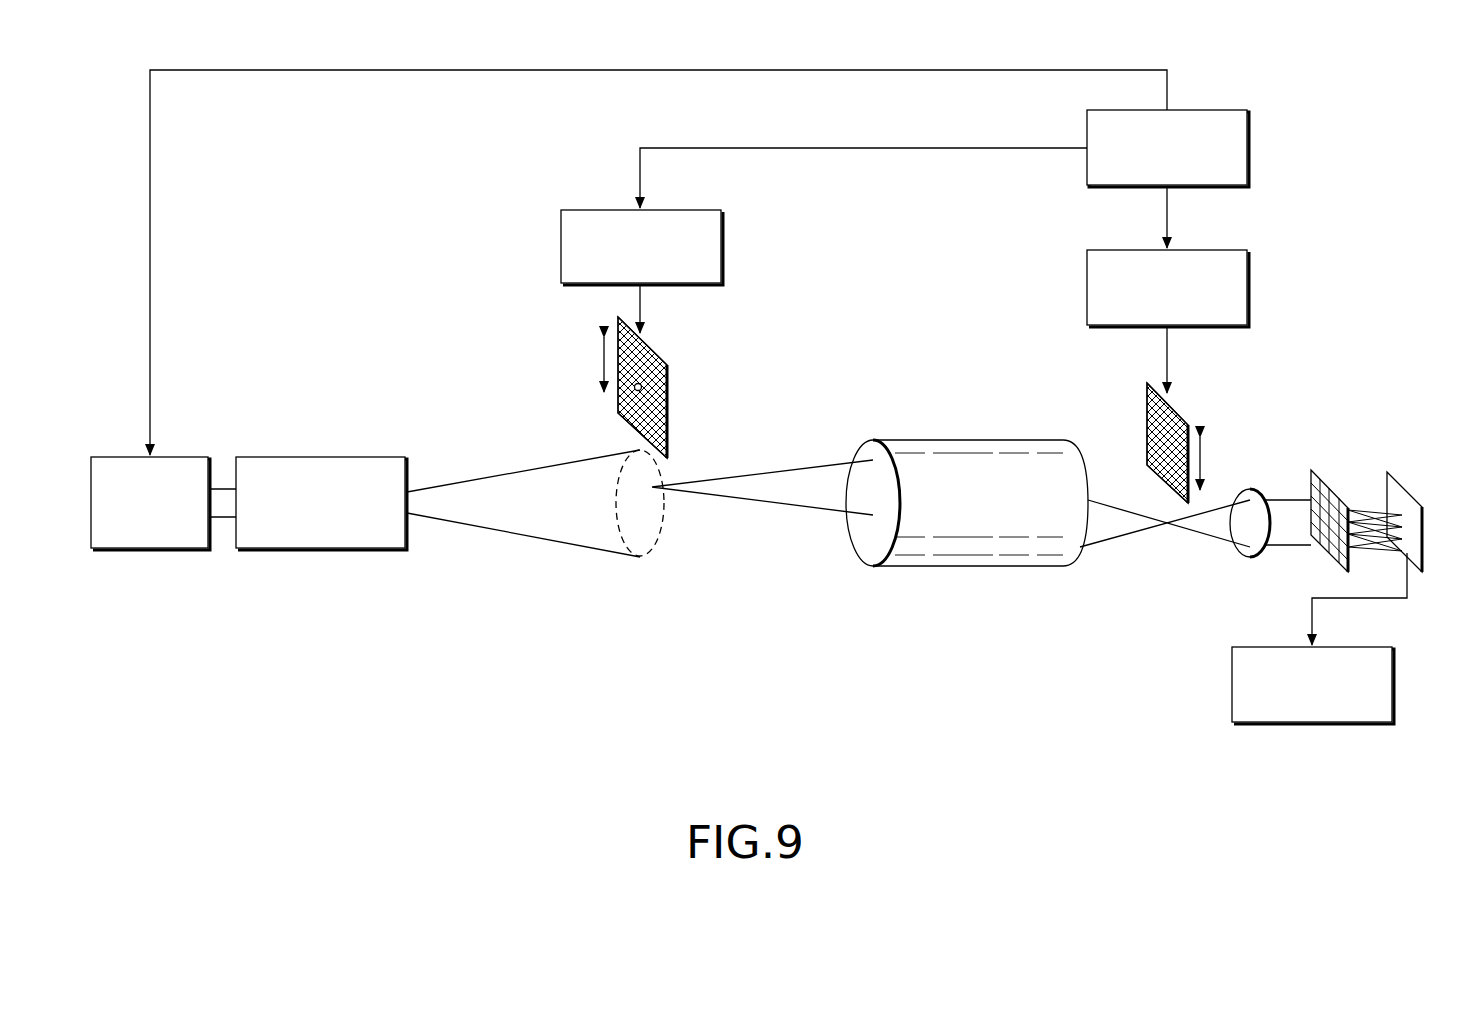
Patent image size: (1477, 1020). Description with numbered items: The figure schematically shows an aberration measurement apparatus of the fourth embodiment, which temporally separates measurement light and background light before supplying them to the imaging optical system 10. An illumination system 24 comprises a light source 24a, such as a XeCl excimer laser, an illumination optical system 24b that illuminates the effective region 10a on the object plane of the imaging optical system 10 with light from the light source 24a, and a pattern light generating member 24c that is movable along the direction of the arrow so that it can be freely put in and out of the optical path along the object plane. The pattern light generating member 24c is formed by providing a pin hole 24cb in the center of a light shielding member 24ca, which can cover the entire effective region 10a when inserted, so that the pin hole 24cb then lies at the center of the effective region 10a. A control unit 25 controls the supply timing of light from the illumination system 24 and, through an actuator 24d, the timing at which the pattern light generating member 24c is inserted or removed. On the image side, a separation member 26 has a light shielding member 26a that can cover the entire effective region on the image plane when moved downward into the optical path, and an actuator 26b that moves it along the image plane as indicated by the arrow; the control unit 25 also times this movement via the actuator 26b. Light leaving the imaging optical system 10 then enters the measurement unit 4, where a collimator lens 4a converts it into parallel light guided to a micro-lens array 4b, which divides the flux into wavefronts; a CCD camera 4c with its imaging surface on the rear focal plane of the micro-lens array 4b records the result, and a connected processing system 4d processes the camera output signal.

The measurement unit 4 is at (1457, 428).
The collimator lens 4a is at (1249, 490).
The micro-lens array 4b is at (1324, 482).
The CCD camera 4c is at (1391, 481).
The processing system 4d is at (1394, 672).
The imaging optical system 10 is at (993, 440).
The effective region 10a is at (656, 545).
The illumination system 24 is at (335, 612).
The light source 24a is at (168, 553).
The illumination optical system 24b is at (310, 553).
The pattern light generating member 24c is at (670, 386).
The light shielding member 24ca is at (653, 349).
The pin hole 24cb is at (640, 392).
The actuator 24d is at (723, 246).
The control unit 25 is at (1249, 148).
The separation member 26 is at (1143, 410).
The light shielding member 26a is at (1175, 422).
The actuator 26b is at (1249, 288).